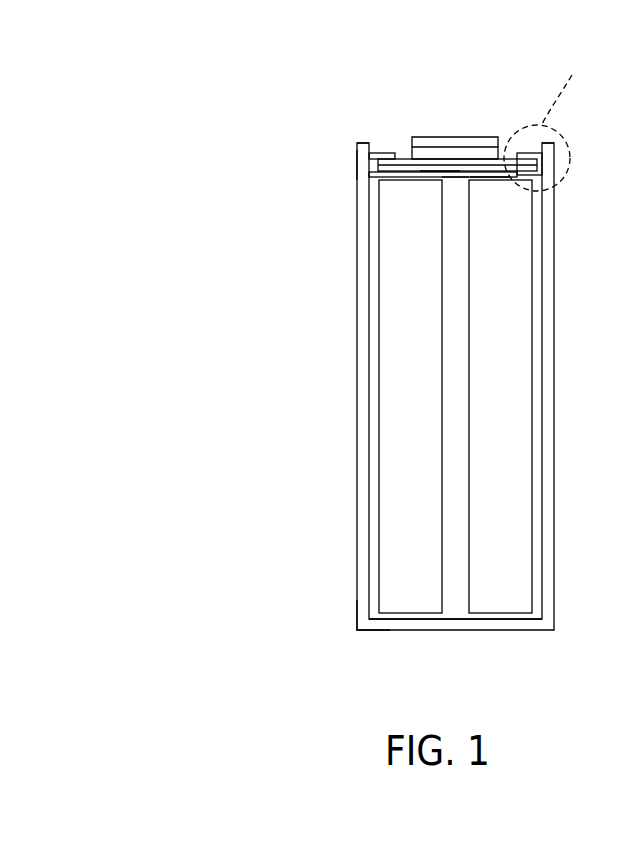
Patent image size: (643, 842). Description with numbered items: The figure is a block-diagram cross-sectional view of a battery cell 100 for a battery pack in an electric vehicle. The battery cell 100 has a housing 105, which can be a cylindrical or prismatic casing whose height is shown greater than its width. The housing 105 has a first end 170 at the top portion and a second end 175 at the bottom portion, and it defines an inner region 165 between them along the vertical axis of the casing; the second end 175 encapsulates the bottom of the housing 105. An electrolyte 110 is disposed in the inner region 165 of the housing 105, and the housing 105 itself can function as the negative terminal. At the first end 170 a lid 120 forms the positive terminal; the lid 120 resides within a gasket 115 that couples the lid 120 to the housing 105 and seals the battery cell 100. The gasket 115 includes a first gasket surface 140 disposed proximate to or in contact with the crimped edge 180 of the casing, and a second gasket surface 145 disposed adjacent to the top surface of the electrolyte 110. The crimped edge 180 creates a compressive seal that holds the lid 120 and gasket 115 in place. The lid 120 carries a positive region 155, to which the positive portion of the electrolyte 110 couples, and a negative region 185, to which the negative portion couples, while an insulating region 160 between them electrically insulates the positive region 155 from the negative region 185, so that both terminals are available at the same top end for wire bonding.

The battery cell 100 is at (130, 176).
The housing 105 is at (554, 503).
The electrolyte 110 is at (392, 493).
The gasket 115 is at (357, 146).
The lid 120 is at (446, 137).
The first gasket surface 140 is at (389, 153).
The second gasket surface 145 is at (372, 178).
The positive region 155 is at (459, 147).
The insulating region 160 is at (441, 165).
The inner region 165 is at (458, 598).
The first end 170 is at (357, 160).
The second end 175 is at (357, 618).
The crimped edge 180 is at (371, 150).
The negative region 185 is at (453, 178).